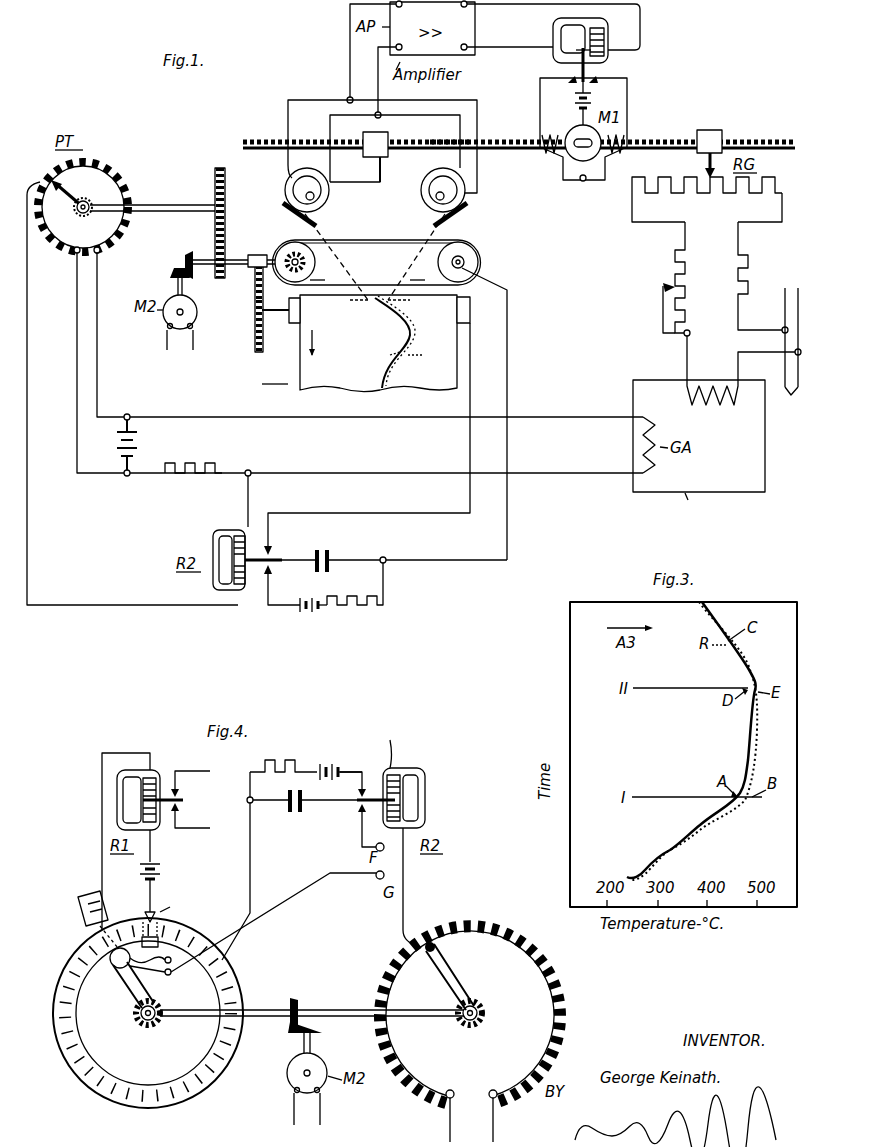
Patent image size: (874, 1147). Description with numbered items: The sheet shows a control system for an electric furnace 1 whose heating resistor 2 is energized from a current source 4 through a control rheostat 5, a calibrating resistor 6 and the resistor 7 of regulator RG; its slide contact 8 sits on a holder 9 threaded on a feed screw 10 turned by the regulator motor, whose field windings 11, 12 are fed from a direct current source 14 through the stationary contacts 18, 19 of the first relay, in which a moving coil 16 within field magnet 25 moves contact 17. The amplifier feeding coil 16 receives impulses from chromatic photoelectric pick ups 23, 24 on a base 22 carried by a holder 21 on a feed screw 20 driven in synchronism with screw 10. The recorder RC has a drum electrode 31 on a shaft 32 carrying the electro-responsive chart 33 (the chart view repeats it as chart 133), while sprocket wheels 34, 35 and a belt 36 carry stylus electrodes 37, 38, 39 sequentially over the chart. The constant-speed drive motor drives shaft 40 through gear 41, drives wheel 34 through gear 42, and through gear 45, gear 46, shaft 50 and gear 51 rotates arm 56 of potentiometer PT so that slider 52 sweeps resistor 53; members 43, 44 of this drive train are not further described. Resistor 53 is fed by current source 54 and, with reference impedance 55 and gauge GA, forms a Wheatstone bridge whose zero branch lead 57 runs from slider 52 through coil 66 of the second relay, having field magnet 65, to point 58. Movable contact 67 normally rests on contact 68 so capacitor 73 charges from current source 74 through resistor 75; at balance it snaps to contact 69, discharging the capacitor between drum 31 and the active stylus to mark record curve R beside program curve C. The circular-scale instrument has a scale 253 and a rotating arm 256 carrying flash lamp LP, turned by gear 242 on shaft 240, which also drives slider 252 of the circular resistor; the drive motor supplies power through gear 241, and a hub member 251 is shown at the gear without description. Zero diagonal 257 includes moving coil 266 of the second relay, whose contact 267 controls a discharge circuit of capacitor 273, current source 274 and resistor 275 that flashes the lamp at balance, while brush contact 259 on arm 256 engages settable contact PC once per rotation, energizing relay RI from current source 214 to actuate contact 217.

In FIG. 1, the electric furnace 1 is at (765, 455).
In FIG. 1, the heating resistor 2 is at (706, 405).
In FIG. 1, the current source 4 is at (793, 394).
In FIG. 1, the control rheostat 5 is at (688, 280).
In FIG. 1, the calibrating resistor 6 is at (745, 269).
In FIG. 1, the resistor 7 is at (704, 192).
In FIG. 1, the slide contact 8 is at (705, 172).
In FIG. 1, the holder 9 is at (722, 135).
In FIG. 1, the feed screw 10 is at (750, 140).
In FIG. 1, the field winding 11 is at (540, 140).
In FIG. 1, the field winding 12 is at (630, 141).
In FIG. 1, the direct current source 14 is at (574, 106).
In FIG. 1, the moving coil 16 is at (612, 49).
In FIG. 1, the contact 17 is at (590, 63).
In FIG. 1, the stationary contact 18 is at (570, 82).
In FIG. 1, the stationary contact 19 is at (596, 83).
In FIG. 1, the feed screw 20 is at (452, 142).
In FIG. 1, the holder 21 is at (388, 135).
In FIG. 1, the base 22 is at (384, 172).
In FIG. 1, the photoelectric pick up 23 is at (287, 200).
In FIG. 1, the photoelectric pick up 24 is at (468, 200).
In FIG. 1, the field magnet 25 is at (574, 22).
In FIG. 1, the drum electrode 31 is at (472, 306).
In FIG. 1, the shaft 32 is at (292, 318).
In FIG. 1, the recording chart 33 is at (427, 388).
In FIG. 1, the sprocket wheel 34 is at (290, 245).
In FIG. 1, the sprocket wheel 35 is at (478, 256).
In FIG. 1, the sprocket chain or belt 36 is at (393, 246).
In FIG. 1, the stylus electrode 37 is at (380, 240).
In FIG. 1, the stylus electrode 38 is at (322, 275).
In FIG. 1, the stylus electrode 39 is at (422, 275).
In FIG. 1, the shaft 40 is at (251, 256).
In FIG. 1, the gear 41 is at (182, 262).
In FIG. 1, the gear 42 is at (286, 305).
In FIG. 1, the shaft 43 is at (255, 291).
In FIG. 1, the toothed bar 44 is at (255, 338).
In FIG. 1, the gear 45 is at (191, 279).
In FIG. 1, the gear 46 is at (215, 182).
In FIG. 1, the shaft 50 is at (191, 208).
In FIG. 1, the gear 51 is at (82, 217).
In FIG. 1, the slide contact 52 is at (67, 210).
In FIG. 1, the potentiometer resistor 53 is at (105, 170).
In FIG. 1, the current source 54 is at (140, 436).
In FIG. 1, the reference impedance 55 is at (192, 466).
In FIG. 1, the arm 56 is at (66, 191).
In FIG. 1, the lead 57 is at (30, 510).
In FIG. 1, the point 58 is at (252, 471).
In FIG. 1, the field magnet 65 is at (213, 532).
In FIG. 1, the coil 66 is at (238, 531).
In FIG. 1, the movable contact 67 is at (256, 592).
In FIG. 1, the stationary contact 68 is at (272, 570).
In FIG. 1, the stationary contact 69 is at (275, 554).
In FIG. 1, the capacitor 73 is at (335, 553).
In FIG. 1, the current source 74 is at (311, 612).
In FIG. 1, the resistor 75 is at (334, 597).
In FIG. 3, the temperature-time curve 133 is at (576, 660).
In FIG. 4, the current source 214 is at (162, 870).
In FIG. 4, the movable relay contact 217 is at (185, 801).
In FIG. 4, the shaft 240 is at (322, 1020).
In FIG. 4, the gear 241 is at (300, 1008).
In FIG. 4, the gear 242 is at (150, 1028).
In FIG. 4, the gear hub 251 is at (485, 1010).
In FIG. 4, the slider 252 is at (440, 945).
In FIG. 4, the circular scale 253 is at (160, 1108).
In FIG. 4, the rotatable arm 256 is at (140, 989).
In FIG. 4, the zero diagonal 257 is at (405, 897).
In FIG. 4, the brush contact 259 is at (147, 913).
In FIG. 4, the moving coil 266 is at (425, 800).
In FIG. 4, the movable contact 267 is at (352, 803).
In FIG. 4, the capacitor 273 is at (288, 812).
In FIG. 4, the current source 274 is at (324, 764).
In FIG. 4, the resistor 275 is at (296, 762).